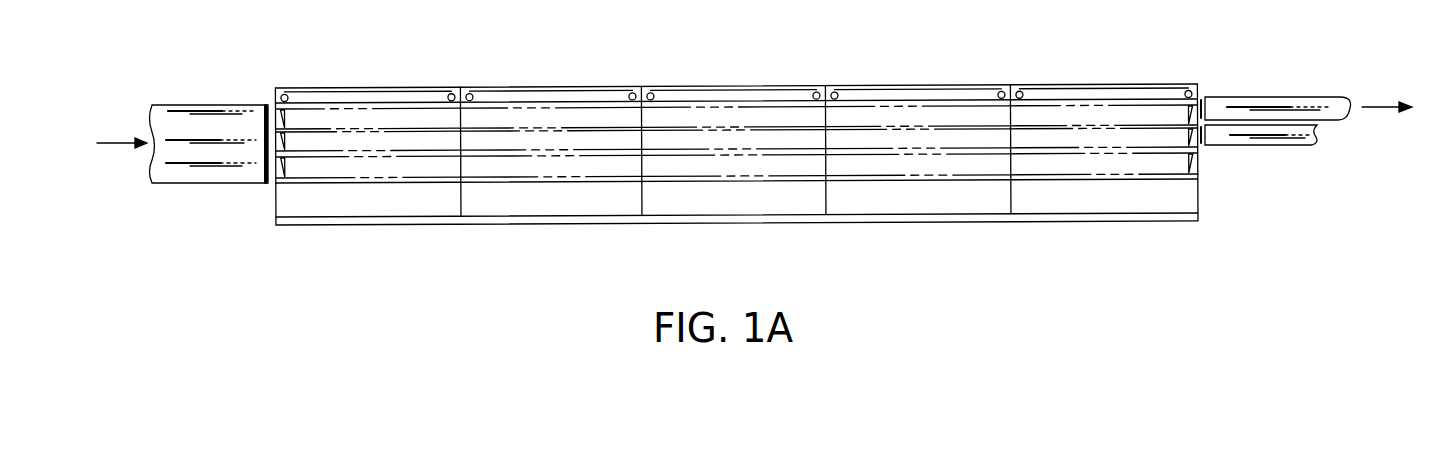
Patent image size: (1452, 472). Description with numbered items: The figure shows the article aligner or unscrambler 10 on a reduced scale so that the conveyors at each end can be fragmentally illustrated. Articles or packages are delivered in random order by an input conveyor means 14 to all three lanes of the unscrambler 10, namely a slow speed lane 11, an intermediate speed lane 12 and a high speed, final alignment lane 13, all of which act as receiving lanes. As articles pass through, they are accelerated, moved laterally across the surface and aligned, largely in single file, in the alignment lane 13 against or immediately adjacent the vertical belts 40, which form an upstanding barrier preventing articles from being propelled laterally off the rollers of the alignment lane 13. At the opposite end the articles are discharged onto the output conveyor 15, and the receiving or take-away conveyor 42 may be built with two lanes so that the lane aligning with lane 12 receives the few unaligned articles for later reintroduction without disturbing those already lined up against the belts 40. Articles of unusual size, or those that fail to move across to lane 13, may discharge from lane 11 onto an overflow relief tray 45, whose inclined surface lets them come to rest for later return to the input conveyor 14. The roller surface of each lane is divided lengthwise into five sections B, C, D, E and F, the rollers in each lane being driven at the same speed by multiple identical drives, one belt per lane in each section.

The unscrambler 10 is at (736, 148).
The slow speed lane 11 is at (535, 165).
The intermediate speed lane 12 is at (908, 145).
The high speed final alignment lane 13 is at (1038, 113).
The input conveyor means 14 is at (200, 103).
The output conveyor 15 is at (1276, 107).
The vertical belts 40 is at (770, 92).
The take-away conveyor 42 is at (1263, 146).
The overflow relief tray 45 is at (378, 210).
The section B is at (370, 88).
The section C is at (555, 88).
The section D is at (710, 88).
The section E is at (870, 86).
The section F is at (1108, 86).